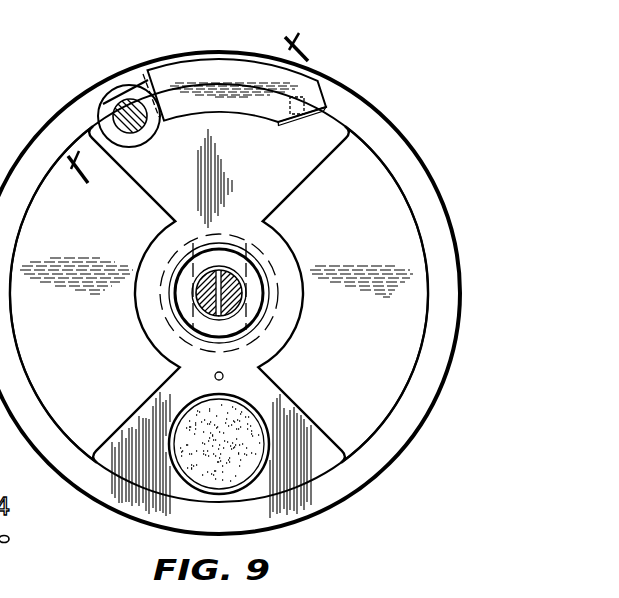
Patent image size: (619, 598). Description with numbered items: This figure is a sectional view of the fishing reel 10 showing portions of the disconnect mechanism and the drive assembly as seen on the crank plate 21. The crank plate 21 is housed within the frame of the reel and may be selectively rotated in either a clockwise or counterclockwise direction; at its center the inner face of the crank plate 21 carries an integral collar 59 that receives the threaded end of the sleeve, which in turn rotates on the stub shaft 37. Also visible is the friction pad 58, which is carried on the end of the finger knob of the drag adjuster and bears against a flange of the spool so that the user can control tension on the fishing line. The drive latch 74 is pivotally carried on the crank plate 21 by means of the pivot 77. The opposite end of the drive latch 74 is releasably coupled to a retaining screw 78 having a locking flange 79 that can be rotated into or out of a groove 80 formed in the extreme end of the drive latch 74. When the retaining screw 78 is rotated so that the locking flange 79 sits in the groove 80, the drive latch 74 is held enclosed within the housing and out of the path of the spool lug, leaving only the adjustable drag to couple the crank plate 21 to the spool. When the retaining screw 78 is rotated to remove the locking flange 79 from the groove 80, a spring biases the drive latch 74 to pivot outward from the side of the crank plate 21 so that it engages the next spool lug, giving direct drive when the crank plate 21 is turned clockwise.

The fishing reel 10 is at (205, 120).
The crank plate 21 is at (405, 146).
The stub shaft 37 is at (240, 302).
The friction pad 58 is at (250, 421).
The collar 59 is at (267, 270).
The drive latch 74 is at (217, 63).
The pivot 77 is at (299, 102).
The retaining screw 78 is at (132, 126).
The locking flange 79 is at (126, 87).
The groove 80 is at (142, 84).